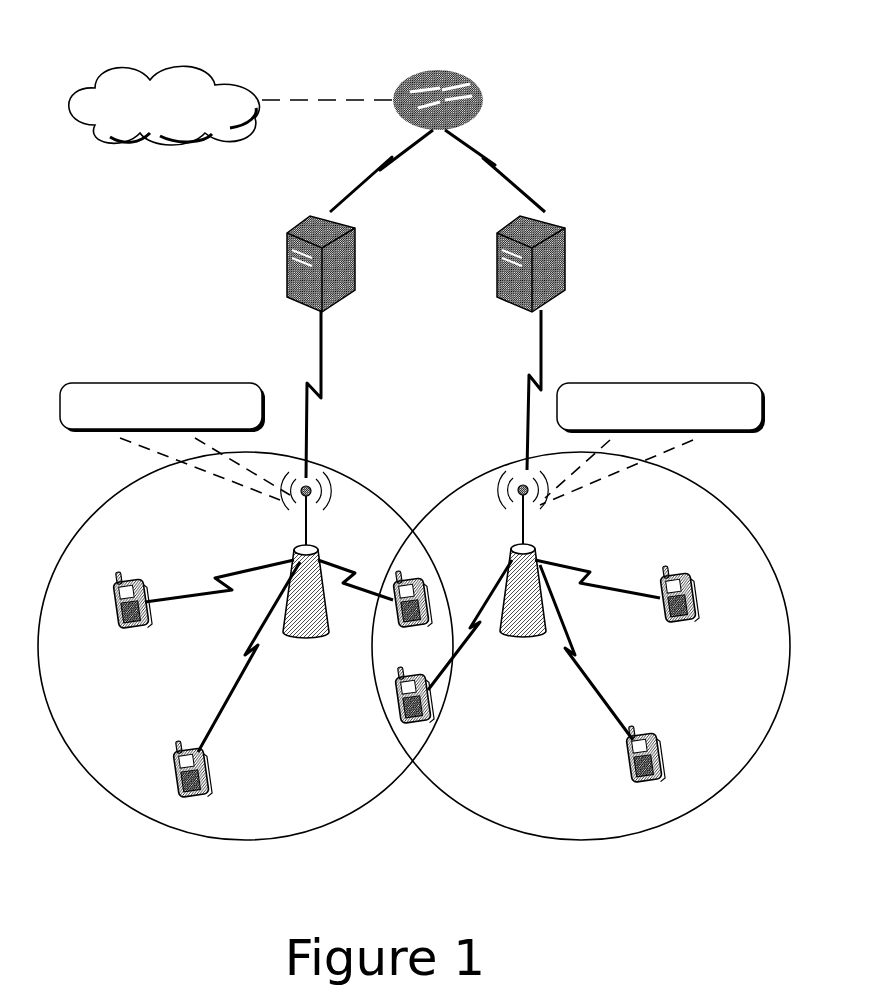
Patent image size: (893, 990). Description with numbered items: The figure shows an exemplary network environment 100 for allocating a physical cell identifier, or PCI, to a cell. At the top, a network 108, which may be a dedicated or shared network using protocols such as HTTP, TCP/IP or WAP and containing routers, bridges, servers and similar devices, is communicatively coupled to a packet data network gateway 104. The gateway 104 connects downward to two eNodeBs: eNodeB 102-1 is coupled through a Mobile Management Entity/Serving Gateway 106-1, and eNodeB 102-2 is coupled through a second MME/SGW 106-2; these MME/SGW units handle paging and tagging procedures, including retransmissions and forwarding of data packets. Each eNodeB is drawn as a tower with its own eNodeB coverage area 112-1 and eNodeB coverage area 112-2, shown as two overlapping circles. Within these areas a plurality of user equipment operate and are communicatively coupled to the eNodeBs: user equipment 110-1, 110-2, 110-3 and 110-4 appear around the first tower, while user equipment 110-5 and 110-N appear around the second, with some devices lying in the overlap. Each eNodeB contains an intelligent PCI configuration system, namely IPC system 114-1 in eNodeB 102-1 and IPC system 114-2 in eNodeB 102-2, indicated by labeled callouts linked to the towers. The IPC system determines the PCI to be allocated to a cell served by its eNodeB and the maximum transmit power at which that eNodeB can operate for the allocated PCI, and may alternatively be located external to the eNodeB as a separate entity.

The network environment 100 is at (352, 42).
The eNodeB 102-1 is at (300, 512).
The eNodeB 102-2 is at (528, 513).
The packet data network gateway (PDN-GW) 104 is at (478, 92).
The Mobile Management Entity/Serving Gateway (MME/SGW) 106-1 is at (355, 265).
The Mobile Management Entity/Serving Gateway (MME/SGW) 106-2 is at (565, 265).
The network 108 is at (231, 105).
The user equipment 110-1 is at (138, 632).
The user equipment 110-2 is at (206, 758).
The user equipment 110-3 is at (400, 690).
The user equipment 110-4 is at (420, 582).
The user equipment 110-5 is at (652, 740).
The user equipment 110-N is at (688, 582).
The eNodeB coverage area 112-1 is at (148, 822).
The eNodeB coverage area 112-2 is at (672, 826).
The intelligent PCI configuration (IPC) system 114-1 is at (175, 441).
The intelligent PCI configuration (IPC) system 114-2 is at (652, 444).